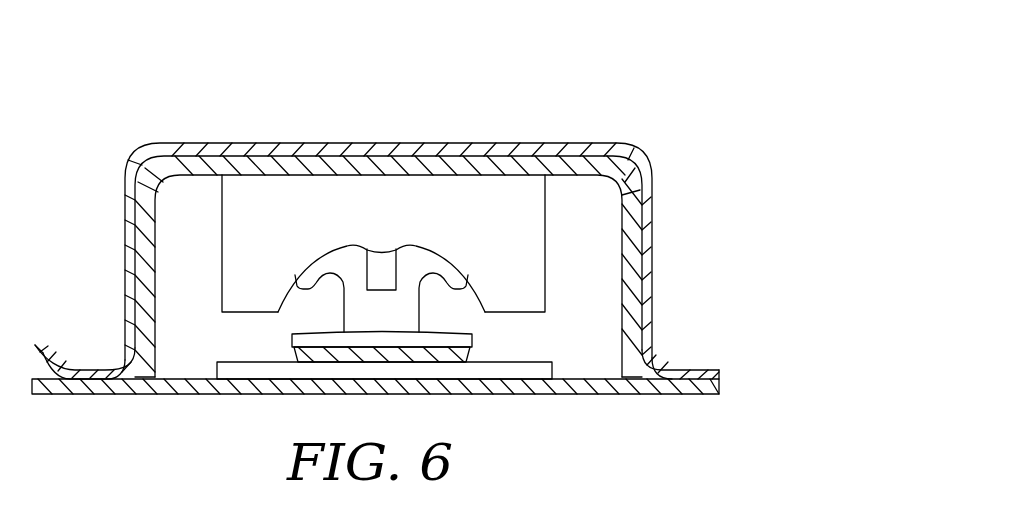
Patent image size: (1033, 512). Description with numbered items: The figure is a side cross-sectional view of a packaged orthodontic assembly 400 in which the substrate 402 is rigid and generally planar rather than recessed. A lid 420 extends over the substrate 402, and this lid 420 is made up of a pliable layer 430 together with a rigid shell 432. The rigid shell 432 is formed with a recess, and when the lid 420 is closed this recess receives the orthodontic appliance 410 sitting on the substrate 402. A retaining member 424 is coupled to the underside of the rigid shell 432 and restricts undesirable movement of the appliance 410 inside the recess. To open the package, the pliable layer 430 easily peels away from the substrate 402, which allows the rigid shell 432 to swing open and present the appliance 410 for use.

The assembly 400 is at (606, 49).
The substrate 402 is at (655, 387).
The appliance 410 is at (345, 265).
The lid 420 is at (515, 141).
The retaining member 424 is at (252, 195).
The pliable layer 430 is at (87, 368).
The rigid shell 432 is at (632, 352).